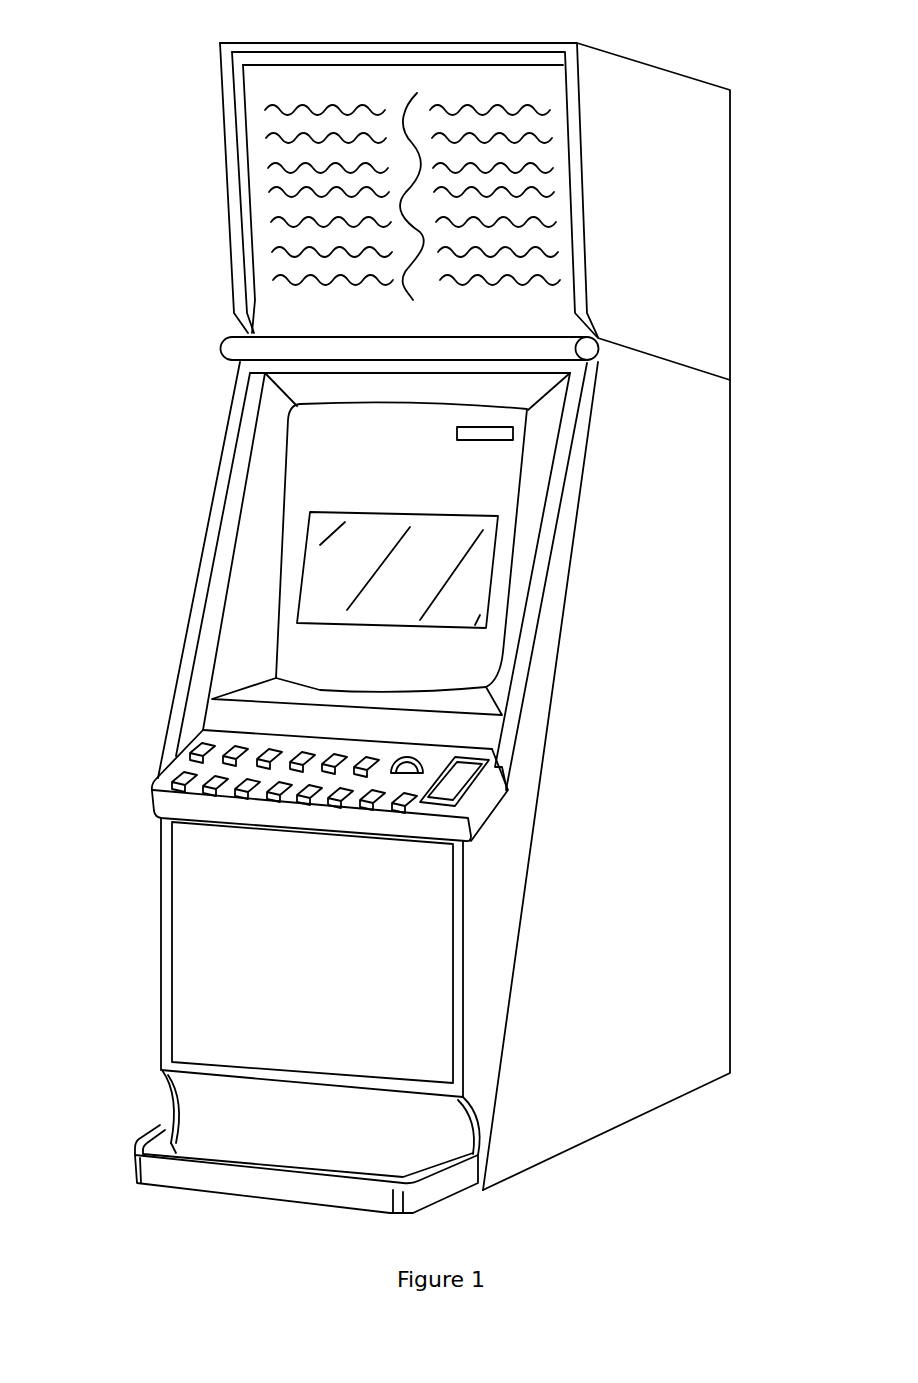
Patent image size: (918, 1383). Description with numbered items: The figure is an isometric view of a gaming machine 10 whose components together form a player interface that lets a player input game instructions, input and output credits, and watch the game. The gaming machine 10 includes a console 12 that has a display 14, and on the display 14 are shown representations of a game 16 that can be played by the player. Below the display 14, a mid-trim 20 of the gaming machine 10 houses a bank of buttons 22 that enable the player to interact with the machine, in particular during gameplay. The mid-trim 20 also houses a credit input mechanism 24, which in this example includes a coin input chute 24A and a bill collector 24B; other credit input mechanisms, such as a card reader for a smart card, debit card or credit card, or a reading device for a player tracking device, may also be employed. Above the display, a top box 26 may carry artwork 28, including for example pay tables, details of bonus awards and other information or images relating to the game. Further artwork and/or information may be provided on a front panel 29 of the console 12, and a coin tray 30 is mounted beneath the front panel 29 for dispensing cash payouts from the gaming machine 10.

The gaming machine 10 is at (703, 57).
The console 12 is at (697, 585).
The display 14 is at (274, 637).
The game 16 is at (302, 573).
The mid-trim 20 is at (150, 793).
The bank of buttons 22 is at (240, 792).
The credit input mechanism 24 is at (450, 737).
The coin input chute 24A is at (420, 757).
The bill collector 24B is at (443, 797).
The top box 26 is at (228, 224).
The artwork 28 is at (284, 115).
The front panel 29 is at (200, 996).
The coin tray 30 is at (133, 1168).